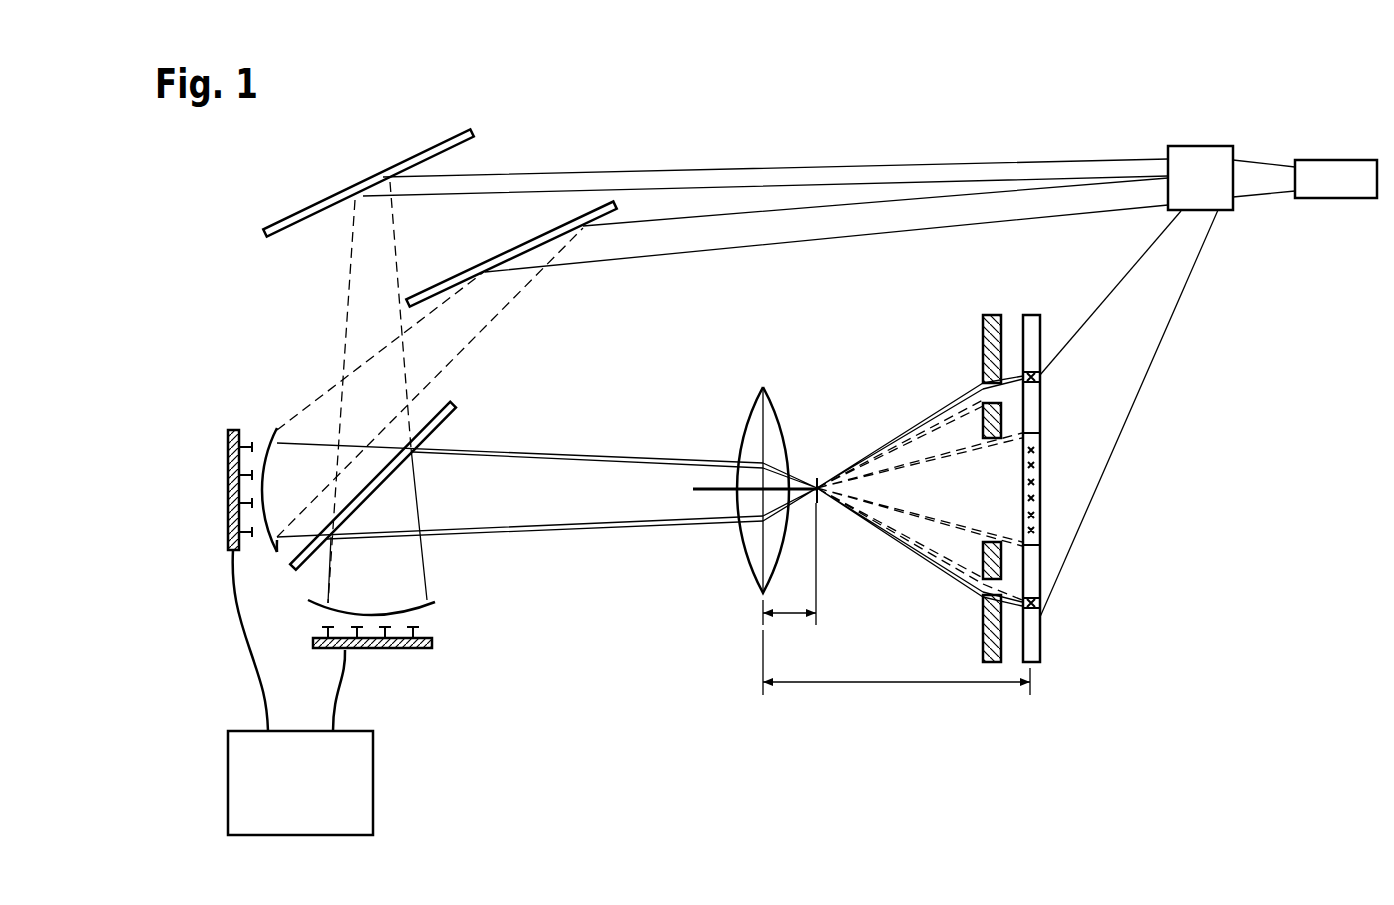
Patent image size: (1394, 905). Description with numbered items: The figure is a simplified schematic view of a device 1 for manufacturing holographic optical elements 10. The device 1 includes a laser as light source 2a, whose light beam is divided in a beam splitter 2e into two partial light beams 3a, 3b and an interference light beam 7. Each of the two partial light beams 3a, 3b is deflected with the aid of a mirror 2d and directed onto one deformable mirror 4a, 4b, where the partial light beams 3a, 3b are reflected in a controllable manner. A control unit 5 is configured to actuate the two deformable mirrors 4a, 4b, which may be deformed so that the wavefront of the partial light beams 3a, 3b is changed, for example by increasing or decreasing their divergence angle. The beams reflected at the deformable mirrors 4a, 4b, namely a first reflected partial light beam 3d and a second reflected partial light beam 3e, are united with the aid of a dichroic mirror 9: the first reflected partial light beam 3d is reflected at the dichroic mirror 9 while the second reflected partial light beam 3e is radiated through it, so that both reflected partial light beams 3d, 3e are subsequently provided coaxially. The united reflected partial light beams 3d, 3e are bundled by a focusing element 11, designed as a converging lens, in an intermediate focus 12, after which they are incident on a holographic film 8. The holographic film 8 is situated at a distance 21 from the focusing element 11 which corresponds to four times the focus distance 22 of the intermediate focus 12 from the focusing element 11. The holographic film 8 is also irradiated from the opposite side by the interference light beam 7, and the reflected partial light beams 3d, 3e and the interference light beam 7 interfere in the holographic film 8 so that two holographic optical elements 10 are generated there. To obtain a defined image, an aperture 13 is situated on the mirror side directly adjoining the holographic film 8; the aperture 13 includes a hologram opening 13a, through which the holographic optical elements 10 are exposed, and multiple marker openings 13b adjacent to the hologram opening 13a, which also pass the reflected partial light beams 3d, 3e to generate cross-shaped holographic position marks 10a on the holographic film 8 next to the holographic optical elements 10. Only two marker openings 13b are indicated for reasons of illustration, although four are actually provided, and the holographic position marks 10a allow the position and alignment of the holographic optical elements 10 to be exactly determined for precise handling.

The device 1 is at (572, 128).
The light source 2a is at (1340, 160).
The mirror 2d is at (438, 146).
The beam splitter 2e is at (1200, 146).
The partial light beam 3a is at (344, 300).
The partial light beam 3b is at (298, 417).
The first reflected partial light beam 3d is at (430, 587).
The second reflected partial light beam 3e is at (284, 552).
The deformable mirror 4a is at (239, 418).
The deformable mirror 4b is at (455, 635).
The control unit 5 is at (352, 792).
The interference light beam 7 is at (1182, 298).
The holographic film 8 is at (1033, 330).
The dichroic mirror 9 is at (457, 411).
The holographic optical element 10 is at (1062, 518).
The holographic position mark 10a is at (1040, 377).
The focusing element 11 is at (748, 432).
The intermediate focus 12 is at (818, 478).
The aperture 13 is at (985, 315).
The hologram opening 13a is at (968, 434).
The marker opening 13b is at (977, 389).
The distance 21 is at (893, 685).
The focus distance 22 is at (793, 615).